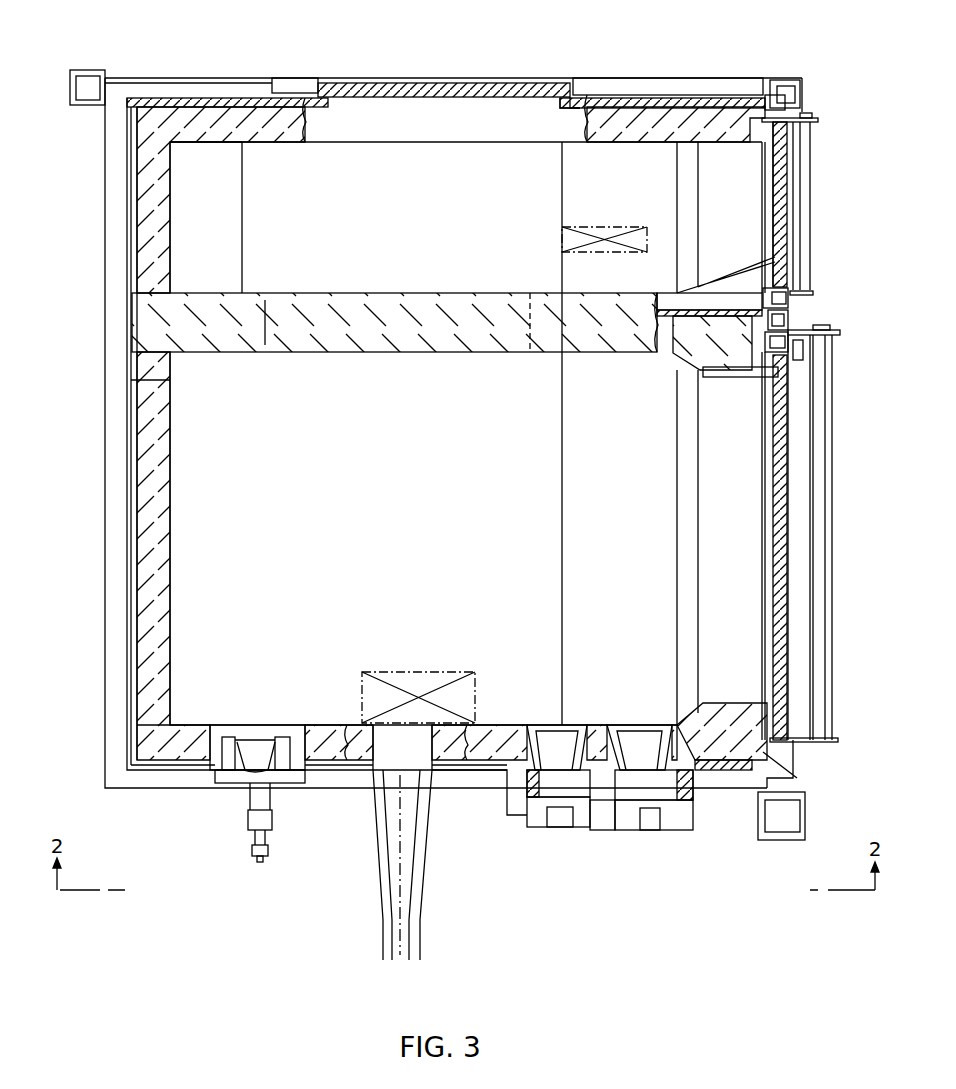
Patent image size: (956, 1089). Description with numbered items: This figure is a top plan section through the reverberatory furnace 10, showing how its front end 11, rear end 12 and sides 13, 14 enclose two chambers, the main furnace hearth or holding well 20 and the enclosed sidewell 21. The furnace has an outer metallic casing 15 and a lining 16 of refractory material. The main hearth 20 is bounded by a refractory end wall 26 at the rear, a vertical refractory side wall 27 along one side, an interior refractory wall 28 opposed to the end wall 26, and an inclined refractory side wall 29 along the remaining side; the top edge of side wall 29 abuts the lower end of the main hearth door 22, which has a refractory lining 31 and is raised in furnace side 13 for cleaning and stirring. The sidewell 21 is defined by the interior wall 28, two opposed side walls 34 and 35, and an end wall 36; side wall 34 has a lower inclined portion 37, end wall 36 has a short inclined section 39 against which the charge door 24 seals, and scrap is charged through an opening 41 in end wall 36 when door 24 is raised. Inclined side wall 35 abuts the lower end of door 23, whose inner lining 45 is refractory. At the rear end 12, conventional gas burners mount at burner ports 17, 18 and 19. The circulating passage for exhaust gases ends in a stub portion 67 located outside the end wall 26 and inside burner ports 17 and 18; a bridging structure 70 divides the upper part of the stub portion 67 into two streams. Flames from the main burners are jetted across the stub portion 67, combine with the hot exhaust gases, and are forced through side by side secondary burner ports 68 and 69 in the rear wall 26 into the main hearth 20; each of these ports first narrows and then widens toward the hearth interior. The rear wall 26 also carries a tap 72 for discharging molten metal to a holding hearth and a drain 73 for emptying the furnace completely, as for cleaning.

The reverberatory furnace 10 is at (236, 46).
The front end 11 is at (633, 90).
The rear end 12 is at (470, 780).
The side 13 is at (808, 311).
The side 14 is at (122, 468).
The outer metallic casing 15 is at (130, 533).
The lining 16 is at (160, 546).
The burner port 17 is at (645, 822).
The burner port 18 is at (562, 822).
The burner port 19 is at (258, 752).
The main furnace hearth 20 is at (397, 541).
The sidewell 21 is at (373, 263).
The main hearth door 22 is at (790, 480).
The door 23 is at (790, 178).
The door 24 is at (430, 83).
The end wall 26 is at (183, 725).
The side wall 27 is at (175, 470).
The interior refractory wall 28 is at (216, 350).
The side wall 29 is at (577, 472).
The lining 31 is at (775, 635).
The side wall 34 is at (155, 200).
The side wall 35 is at (710, 178).
The end wall 36 is at (700, 117).
The lower inclined portion 37 is at (215, 210).
The inclined section 39 is at (276, 95).
The opening 41 is at (333, 106).
The inner lining 45 is at (780, 225).
The stub portion 67 is at (540, 790).
The secondary burner port 68 is at (643, 730).
The secondary burner port 69 is at (570, 730).
The bridging structure 70 is at (610, 808).
The tap 72 is at (373, 828).
The drain 73 is at (245, 816).